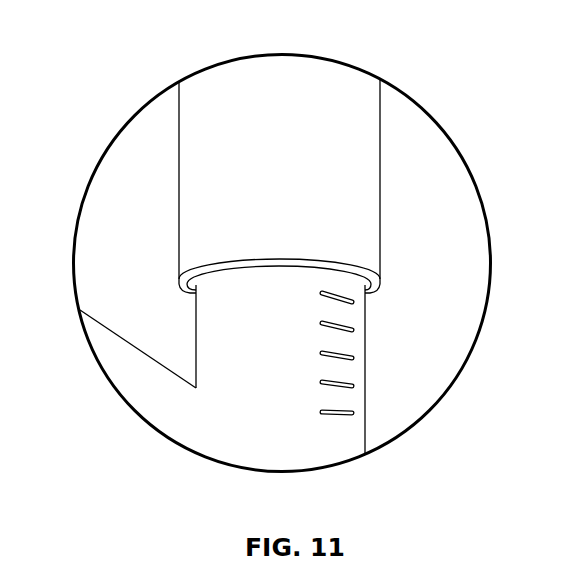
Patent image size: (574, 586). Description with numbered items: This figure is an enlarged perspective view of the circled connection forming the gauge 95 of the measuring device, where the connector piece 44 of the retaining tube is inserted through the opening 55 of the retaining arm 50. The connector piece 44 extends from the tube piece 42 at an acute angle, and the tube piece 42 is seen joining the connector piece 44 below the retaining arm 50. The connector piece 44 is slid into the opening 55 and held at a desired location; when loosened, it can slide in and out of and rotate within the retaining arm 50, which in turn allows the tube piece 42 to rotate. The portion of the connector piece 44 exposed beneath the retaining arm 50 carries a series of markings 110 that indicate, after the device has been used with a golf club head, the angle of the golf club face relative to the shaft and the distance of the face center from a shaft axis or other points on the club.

The gauge 95 is at (117, 58).
The retaining arm 50 is at (370, 181).
The opening 55 is at (368, 290).
The connector piece 44 is at (351, 437).
The markings 110 is at (317, 287).
The tube piece 42 is at (148, 403).